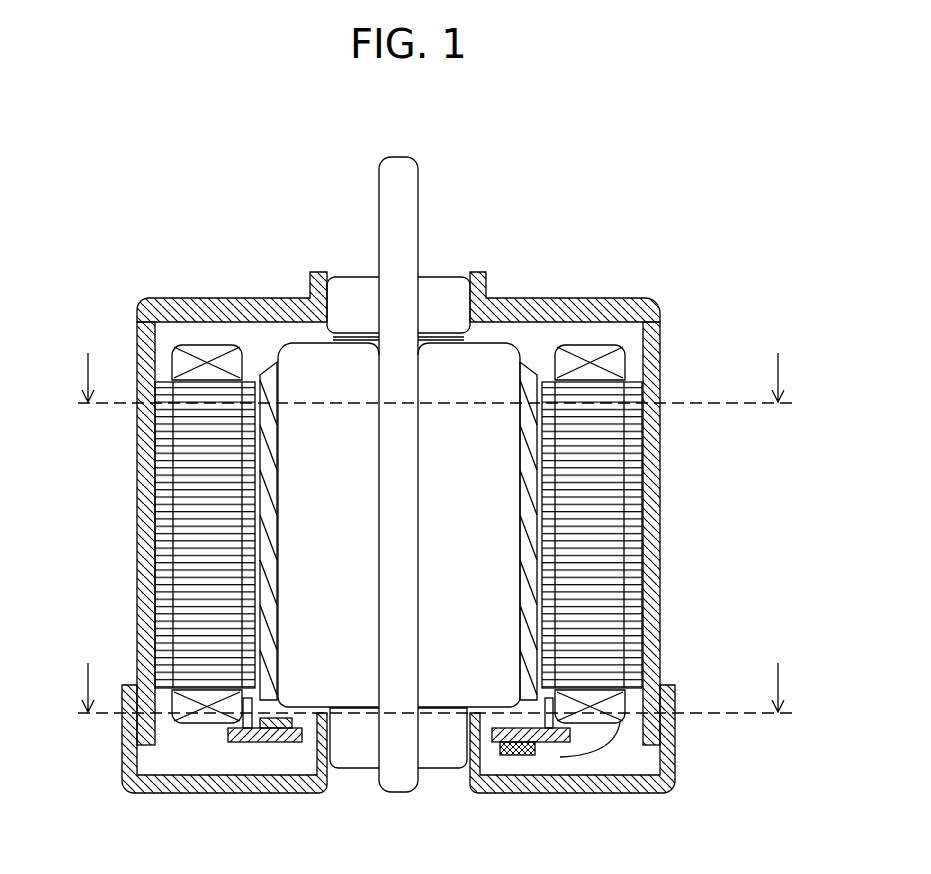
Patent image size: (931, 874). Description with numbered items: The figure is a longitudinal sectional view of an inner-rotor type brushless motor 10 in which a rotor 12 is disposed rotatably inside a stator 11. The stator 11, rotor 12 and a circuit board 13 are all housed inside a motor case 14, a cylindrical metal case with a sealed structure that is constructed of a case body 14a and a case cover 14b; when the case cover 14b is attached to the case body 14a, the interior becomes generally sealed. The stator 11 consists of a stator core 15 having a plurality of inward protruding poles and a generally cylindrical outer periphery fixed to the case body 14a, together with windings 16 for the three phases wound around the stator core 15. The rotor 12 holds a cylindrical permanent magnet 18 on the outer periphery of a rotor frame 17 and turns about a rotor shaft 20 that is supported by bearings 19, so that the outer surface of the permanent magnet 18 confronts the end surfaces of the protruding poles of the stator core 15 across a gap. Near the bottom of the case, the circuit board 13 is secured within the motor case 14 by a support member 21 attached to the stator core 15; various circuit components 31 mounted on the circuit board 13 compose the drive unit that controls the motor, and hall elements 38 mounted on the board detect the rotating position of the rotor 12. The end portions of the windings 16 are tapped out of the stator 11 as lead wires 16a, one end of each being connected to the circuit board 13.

The brushless motor 10 is at (151, 298).
The stator 11 is at (594, 346).
The rotor 12 is at (411, 460).
The circuit board 13 is at (267, 743).
The motor case 14 is at (464, 557).
The case body 14a is at (652, 572).
The case cover 14b is at (438, 694).
The stator core 15 is at (633, 470).
The windings 16 is at (195, 348).
The lead wires 16a is at (663, 792).
The rotor frame 17 is at (313, 355).
The permanent magnet 18 is at (267, 367).
The bearings 19 is at (360, 292).
The rotor shaft 20 is at (427, 211).
The support member 21 is at (243, 718).
The circuit components 31 is at (520, 755).
The hall elements 38 is at (283, 744).